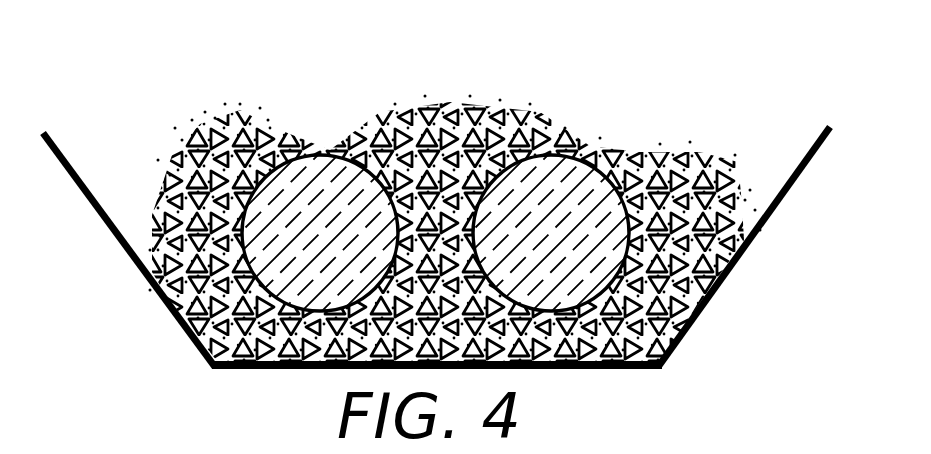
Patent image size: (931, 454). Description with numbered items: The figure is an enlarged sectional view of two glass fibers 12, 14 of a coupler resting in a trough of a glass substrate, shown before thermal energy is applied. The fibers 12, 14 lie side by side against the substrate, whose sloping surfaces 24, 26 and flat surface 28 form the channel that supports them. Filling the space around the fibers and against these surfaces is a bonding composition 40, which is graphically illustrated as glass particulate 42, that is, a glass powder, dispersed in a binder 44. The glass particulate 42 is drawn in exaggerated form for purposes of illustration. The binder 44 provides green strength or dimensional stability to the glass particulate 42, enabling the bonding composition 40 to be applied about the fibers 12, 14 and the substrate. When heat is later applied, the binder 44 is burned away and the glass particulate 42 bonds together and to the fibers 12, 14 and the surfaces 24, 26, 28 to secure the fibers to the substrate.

The fiber 12 is at (333, 188).
The fiber 14 is at (583, 188).
The surface 24 is at (62, 157).
The surface 26 is at (806, 153).
The surface 28 is at (616, 369).
The bonding composition 40 is at (436, 218).
The glass particulate 42 is at (473, 116).
The binder 44 is at (220, 128).